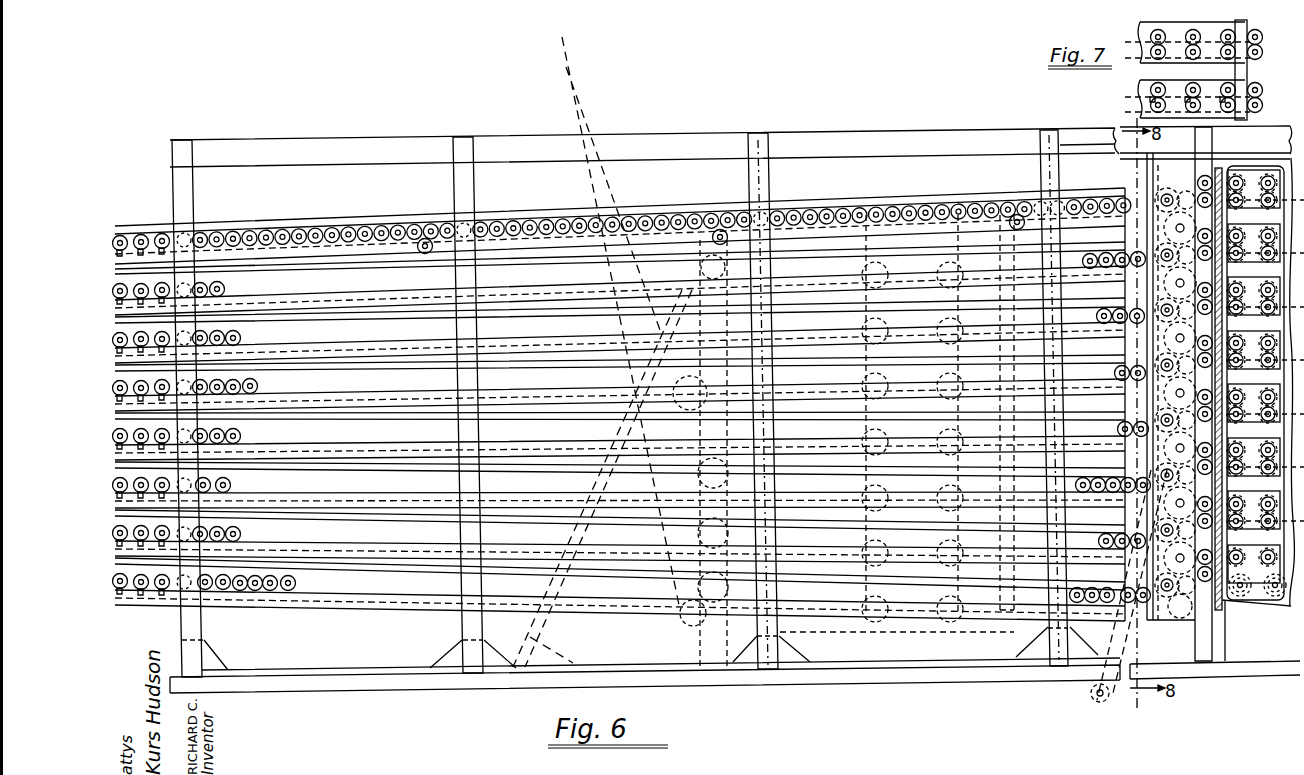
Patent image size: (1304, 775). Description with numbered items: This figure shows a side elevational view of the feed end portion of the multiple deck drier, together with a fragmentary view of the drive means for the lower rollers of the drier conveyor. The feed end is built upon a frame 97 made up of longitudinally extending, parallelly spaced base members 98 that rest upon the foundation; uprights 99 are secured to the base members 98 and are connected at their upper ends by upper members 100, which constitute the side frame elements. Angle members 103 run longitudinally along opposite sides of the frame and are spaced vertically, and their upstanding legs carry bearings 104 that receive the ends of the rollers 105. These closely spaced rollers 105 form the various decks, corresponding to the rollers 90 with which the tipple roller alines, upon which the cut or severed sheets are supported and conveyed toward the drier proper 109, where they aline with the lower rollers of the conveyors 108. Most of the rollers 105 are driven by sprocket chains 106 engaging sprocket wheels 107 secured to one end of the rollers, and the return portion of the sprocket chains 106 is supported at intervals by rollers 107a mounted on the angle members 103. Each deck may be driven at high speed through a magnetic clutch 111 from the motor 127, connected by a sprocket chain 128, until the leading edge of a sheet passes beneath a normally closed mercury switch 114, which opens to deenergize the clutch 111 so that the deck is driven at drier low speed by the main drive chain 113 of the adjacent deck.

In FIG. 6, the rollers 90 is at (118, 232).
In FIG. 6, the frame 97 is at (288, 140).
In FIG. 6, the base members 98 is at (802, 684).
In FIG. 6, the uprights 99 is at (193, 196).
In FIG. 6, the upper members 100 is at (620, 138).
In FIG. 6, the angle members 103 is at (340, 292).
In FIG. 6, the bearings 104 is at (123, 252).
In FIG. 6, the rollers 105 is at (302, 224).
In FIG. 6, the sprocket chains 106 is at (810, 203).
In FIG. 7, the sprocket chains 106 is at (1150, 94).
In FIG. 7, the sprocket wheels 107 is at (1155, 108).
In FIG. 6, the rollers 107a is at (718, 228).
In FIG. 6, the conveyors 108 is at (1259, 389).
In FIG. 6, the drier proper 109 is at (1205, 145).
In FIG. 6, the magnetic clutch 111 is at (1196, 286).
In FIG. 6, the main drive chain 113 is at (1285, 176).
In FIG. 6, the mercury switch 114 is at (1236, 578).
In FIG. 6, the motor 127 is at (1097, 702).
In FIG. 6, the sprocket chain 128 is at (1090, 690).